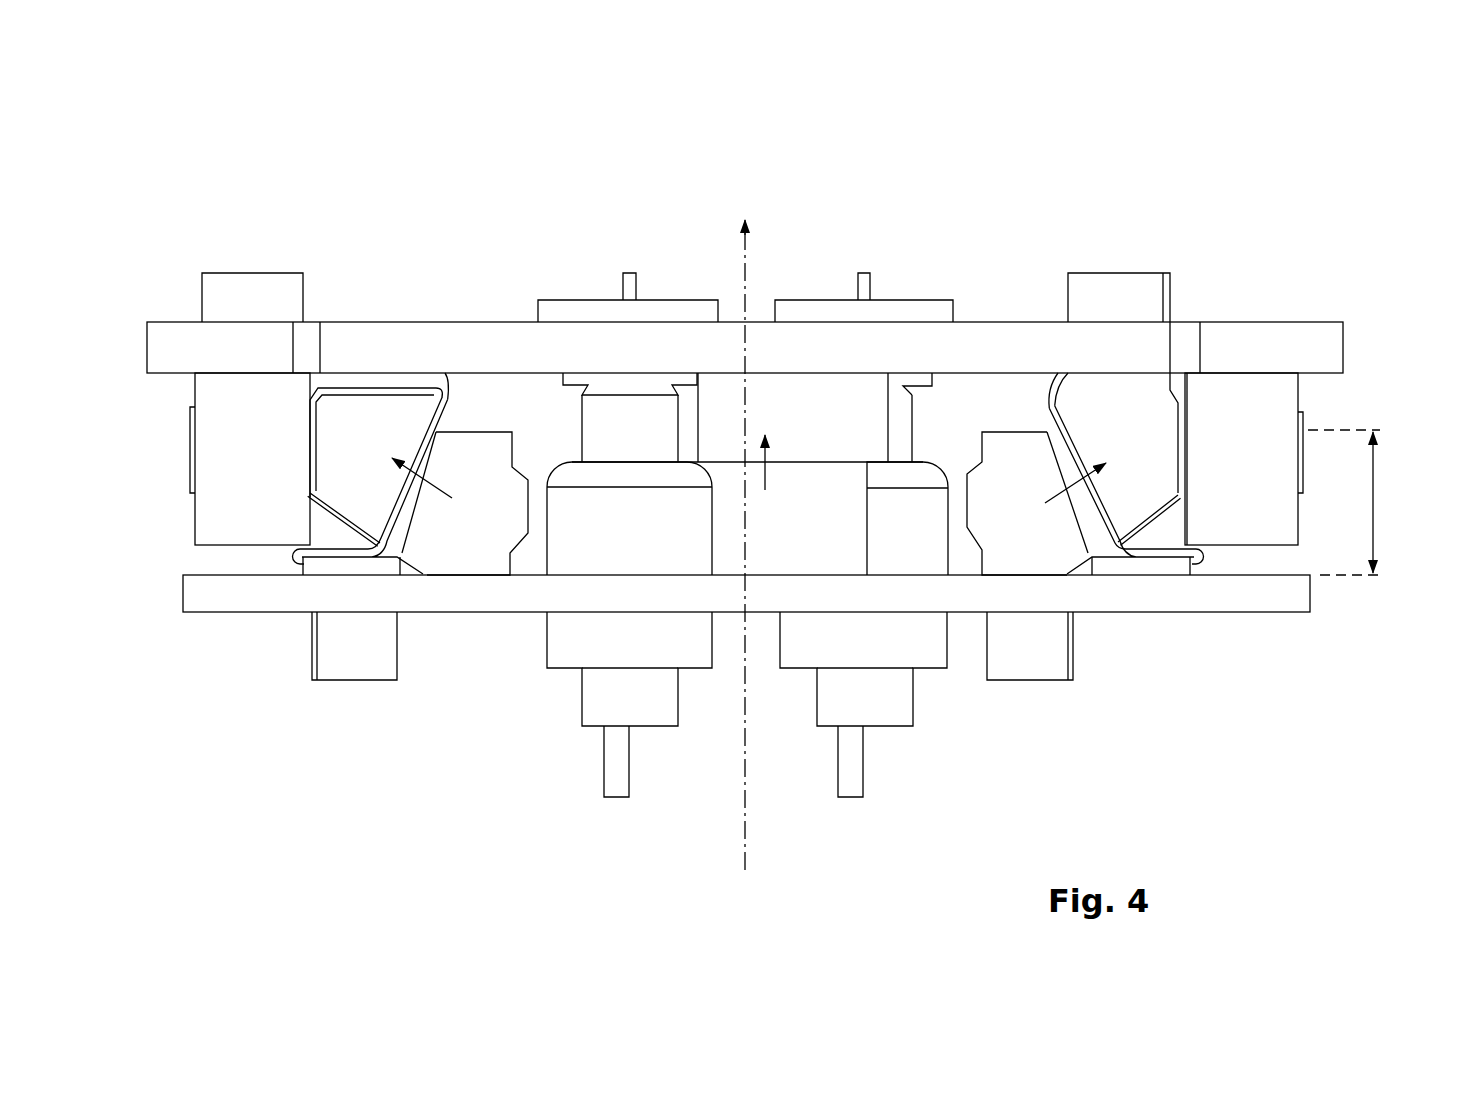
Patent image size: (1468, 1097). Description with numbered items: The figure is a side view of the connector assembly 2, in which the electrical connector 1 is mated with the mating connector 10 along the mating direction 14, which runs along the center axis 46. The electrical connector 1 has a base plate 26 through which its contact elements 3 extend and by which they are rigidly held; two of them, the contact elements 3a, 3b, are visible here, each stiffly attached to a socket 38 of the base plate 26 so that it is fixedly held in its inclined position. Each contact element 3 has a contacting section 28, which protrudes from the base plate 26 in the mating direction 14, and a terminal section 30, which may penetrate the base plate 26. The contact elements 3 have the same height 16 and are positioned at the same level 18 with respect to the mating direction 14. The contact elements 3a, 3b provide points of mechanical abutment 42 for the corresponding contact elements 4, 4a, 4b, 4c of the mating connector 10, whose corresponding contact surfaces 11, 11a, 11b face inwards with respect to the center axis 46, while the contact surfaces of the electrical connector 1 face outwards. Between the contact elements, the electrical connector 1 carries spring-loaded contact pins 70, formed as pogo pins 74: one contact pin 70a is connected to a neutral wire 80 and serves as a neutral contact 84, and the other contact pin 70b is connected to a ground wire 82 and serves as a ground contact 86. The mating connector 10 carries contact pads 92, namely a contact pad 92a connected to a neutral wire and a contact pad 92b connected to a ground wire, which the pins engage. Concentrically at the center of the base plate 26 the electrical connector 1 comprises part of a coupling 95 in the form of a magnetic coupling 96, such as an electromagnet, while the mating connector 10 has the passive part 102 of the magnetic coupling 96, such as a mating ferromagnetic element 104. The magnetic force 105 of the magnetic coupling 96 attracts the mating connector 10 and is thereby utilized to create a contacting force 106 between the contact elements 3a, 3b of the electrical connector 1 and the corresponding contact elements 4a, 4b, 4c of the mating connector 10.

The electrical connector 1 is at (162, 629).
The connector assembly 2 is at (1272, 148).
The contact elements 3 is at (745, 581).
The contact element 3a is at (438, 549).
The contact element 3b is at (997, 523).
The corresponding contact elements 4 is at (754, 376).
The corresponding contact element 4a is at (338, 423).
The corresponding contact element 4b is at (1160, 432).
The corresponding contact element 4c is at (864, 272).
The mating connector 10 is at (140, 347).
The corresponding contact surfaces 11 is at (507, 430).
The corresponding contact surface 11a is at (465, 503).
The corresponding contact surface 11b is at (1027, 503).
The mating direction 14 is at (747, 238).
The height 16 is at (1373, 500).
The level 18 is at (1335, 580).
The base plate 26 is at (1330, 347).
The contacting section 28 is at (525, 446).
The terminal section 30 is at (286, 665).
The socket 38 is at (232, 507).
The points of mechanical abutment 42 is at (425, 549).
The center axis 46 is at (748, 870).
The contact pin 70 is at (748, 355).
The contact pin 70a is at (602, 413).
The contact pin 70b is at (993, 440).
The pogo pin 74 is at (748, 355).
The neutral wire 80 is at (616, 782).
The ground wire 82 is at (848, 782).
The neutral contact 84 is at (572, 642).
The ground contact 86 is at (808, 638).
The contact pad 92 is at (781, 302).
The contact pad 92a is at (653, 380).
The contact pad 92b is at (903, 403).
The coupling 95 is at (747, 542).
The magnetic coupling 96 is at (773, 398).
The passive part 102 is at (719, 417).
The mating ferromagnetic element 104 is at (719, 417).
The magnetic force 105 is at (770, 472).
The contacting force 106 is at (427, 403).